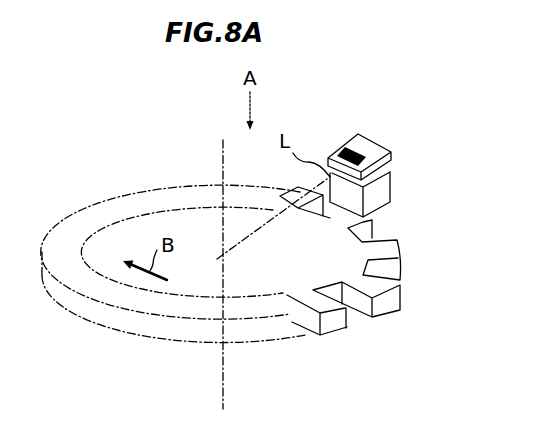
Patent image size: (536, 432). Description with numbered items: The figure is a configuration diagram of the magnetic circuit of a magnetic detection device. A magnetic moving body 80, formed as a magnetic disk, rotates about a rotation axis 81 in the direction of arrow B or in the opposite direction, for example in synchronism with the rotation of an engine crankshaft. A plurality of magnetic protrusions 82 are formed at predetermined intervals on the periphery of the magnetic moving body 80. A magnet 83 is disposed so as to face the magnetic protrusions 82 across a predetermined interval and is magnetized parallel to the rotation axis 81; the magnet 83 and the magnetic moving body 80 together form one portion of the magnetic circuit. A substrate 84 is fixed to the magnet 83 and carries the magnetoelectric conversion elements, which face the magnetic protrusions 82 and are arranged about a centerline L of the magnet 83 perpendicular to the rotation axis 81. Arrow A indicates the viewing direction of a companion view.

The magnetic moving body 80 is at (82, 284).
The rotation axis 81 is at (222, 163).
The magnetic protrusions 82 is at (338, 323).
The magnet 83 is at (378, 192).
The substrate 84 is at (378, 143).